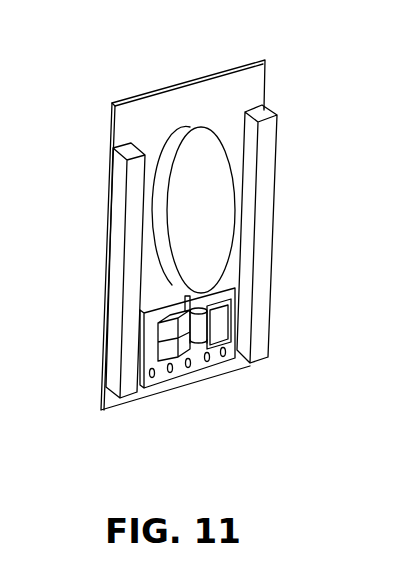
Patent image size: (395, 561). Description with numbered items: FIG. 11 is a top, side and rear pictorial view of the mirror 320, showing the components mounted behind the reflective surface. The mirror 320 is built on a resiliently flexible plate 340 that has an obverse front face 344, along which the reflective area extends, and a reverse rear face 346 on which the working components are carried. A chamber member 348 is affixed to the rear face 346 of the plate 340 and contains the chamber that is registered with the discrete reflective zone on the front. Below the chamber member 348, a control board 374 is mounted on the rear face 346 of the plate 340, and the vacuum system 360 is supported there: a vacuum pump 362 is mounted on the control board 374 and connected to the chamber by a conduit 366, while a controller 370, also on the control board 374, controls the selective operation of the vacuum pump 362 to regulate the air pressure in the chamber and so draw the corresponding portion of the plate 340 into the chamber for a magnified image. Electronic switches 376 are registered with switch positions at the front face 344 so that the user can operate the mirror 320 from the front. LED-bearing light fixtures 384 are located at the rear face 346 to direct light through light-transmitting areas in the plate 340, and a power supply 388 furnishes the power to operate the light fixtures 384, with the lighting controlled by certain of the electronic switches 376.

The mirror 320 is at (108, 102).
The plate 340 is at (174, 96).
The front face 344 is at (236, 68).
The rear face 346 is at (243, 82).
The chamber member 348 is at (218, 170).
The LED-bearing light fixtures 384 is at (264, 205).
The control board 374 is at (137, 393).
The controller 370 is at (218, 338).
The vacuum system 360 is at (212, 322).
The conduit 366 is at (194, 307).
The power supply 388 is at (165, 336).
The electronic switches 376 is at (189, 370).
The vacuum pump 362 is at (193, 353).